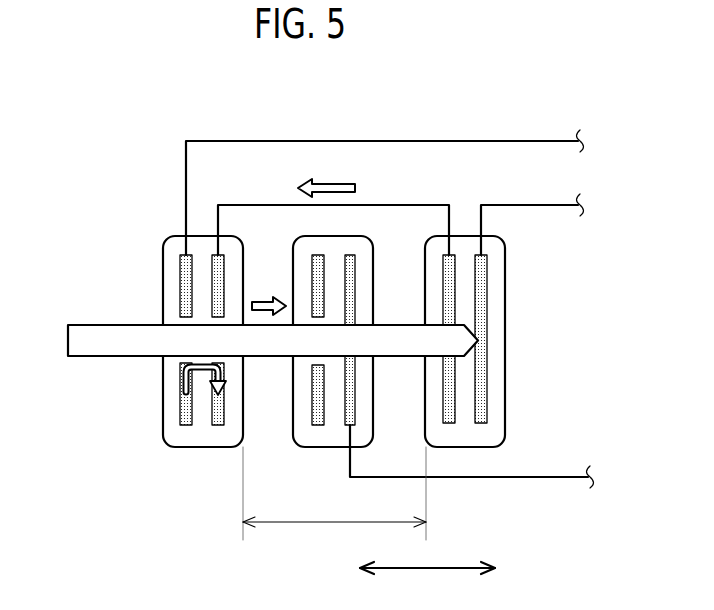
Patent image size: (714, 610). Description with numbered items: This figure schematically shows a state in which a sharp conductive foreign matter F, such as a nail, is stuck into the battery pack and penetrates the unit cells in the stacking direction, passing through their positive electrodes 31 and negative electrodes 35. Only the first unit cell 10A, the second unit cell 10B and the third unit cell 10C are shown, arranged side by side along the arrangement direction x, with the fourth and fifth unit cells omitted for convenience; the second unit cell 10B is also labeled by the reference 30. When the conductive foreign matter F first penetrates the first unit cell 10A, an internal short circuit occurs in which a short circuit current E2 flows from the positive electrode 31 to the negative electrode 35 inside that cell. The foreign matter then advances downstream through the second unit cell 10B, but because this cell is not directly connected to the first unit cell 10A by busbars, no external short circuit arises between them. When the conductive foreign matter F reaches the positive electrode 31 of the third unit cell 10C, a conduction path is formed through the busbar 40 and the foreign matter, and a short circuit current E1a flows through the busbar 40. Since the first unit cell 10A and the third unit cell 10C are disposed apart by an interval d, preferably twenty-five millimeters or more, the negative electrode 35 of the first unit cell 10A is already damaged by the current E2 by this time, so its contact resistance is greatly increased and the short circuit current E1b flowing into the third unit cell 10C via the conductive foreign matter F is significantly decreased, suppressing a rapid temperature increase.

The first unit cell 10A is at (180, 449).
The second unit cell 10B is at (338, 358).
The third unit cell 10C is at (507, 370).
The electrostatic attraction unit 30 is at (345, 238).
The positive electrode 31 is at (181, 420).
The negative electrode 35 is at (226, 414).
The busbar 40 is at (488, 141).
The conductive foreign matter F is at (82, 325).
The short circuit current E1a is at (357, 189).
The short circuit current E1b is at (265, 295).
The short circuit current E2 is at (184, 378).
The interval d is at (334, 501).
The arrangement direction x is at (427, 582).